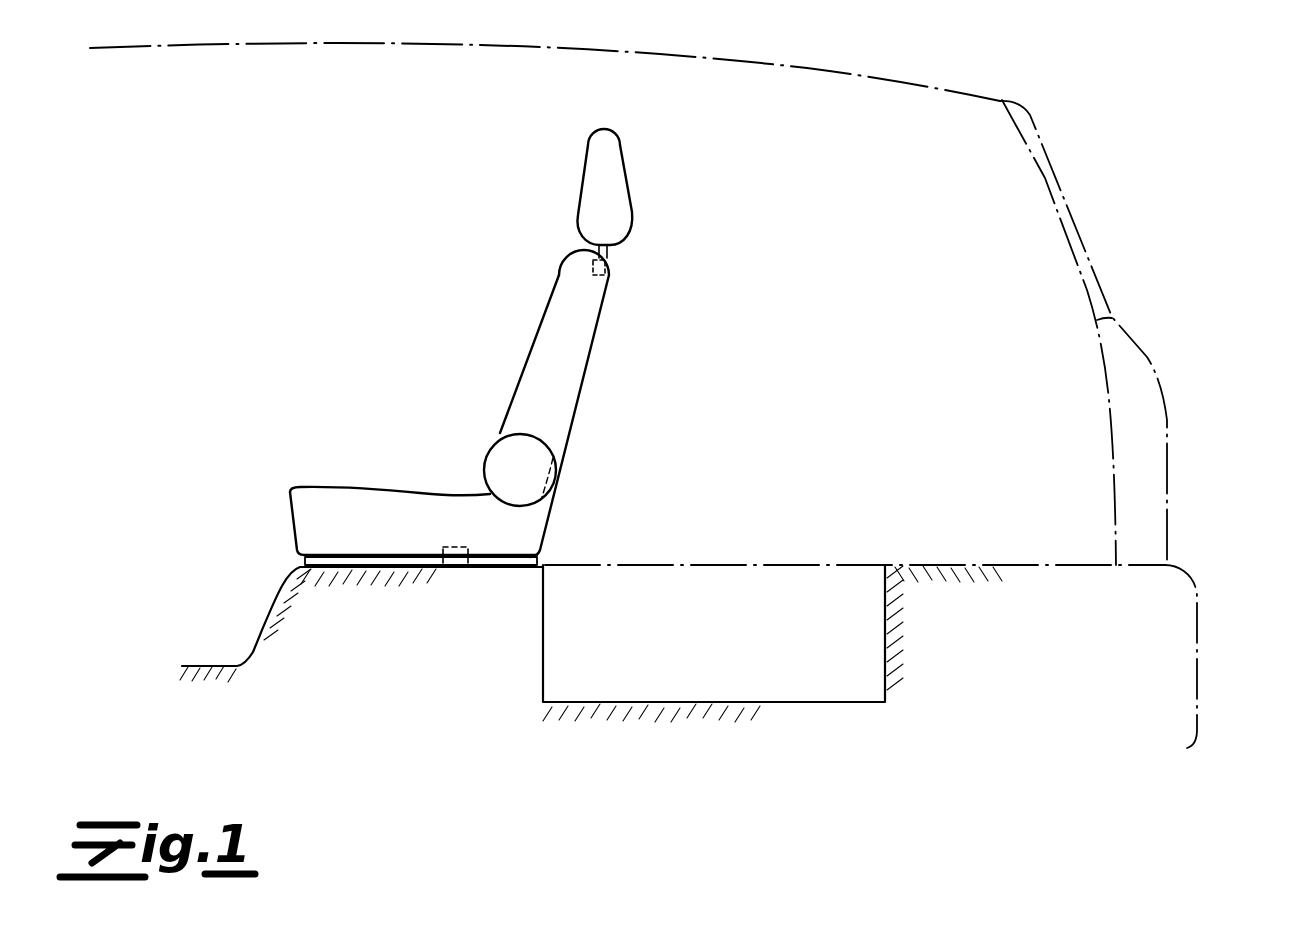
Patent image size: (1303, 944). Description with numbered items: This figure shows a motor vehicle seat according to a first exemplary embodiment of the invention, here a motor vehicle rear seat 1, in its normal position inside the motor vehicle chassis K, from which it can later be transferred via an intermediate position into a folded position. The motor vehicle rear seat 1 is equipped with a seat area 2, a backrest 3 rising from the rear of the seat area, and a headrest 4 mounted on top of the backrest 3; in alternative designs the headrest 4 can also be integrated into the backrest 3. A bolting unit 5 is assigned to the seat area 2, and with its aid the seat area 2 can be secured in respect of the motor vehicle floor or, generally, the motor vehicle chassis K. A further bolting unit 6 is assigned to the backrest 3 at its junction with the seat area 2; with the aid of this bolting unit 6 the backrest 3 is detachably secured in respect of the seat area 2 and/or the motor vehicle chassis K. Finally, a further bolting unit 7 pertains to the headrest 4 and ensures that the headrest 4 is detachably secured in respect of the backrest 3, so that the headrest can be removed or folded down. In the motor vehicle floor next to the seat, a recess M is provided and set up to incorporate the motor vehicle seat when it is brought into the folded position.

The motor vehicle rear seat 1 is at (407, 253).
The seat area 2 is at (357, 483).
The backrest 3 is at (595, 343).
The headrest 4 is at (633, 150).
The bolting unit 5 is at (457, 556).
The bolting unit 6 is at (556, 470).
The bolting unit 7 is at (611, 262).
The recess M is at (785, 698).
The motor vehicle chassis K is at (1199, 692).